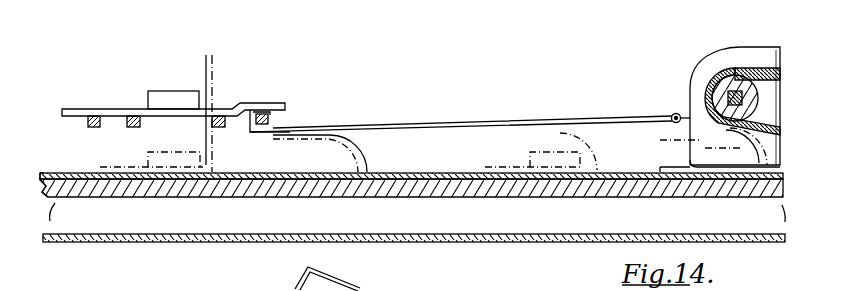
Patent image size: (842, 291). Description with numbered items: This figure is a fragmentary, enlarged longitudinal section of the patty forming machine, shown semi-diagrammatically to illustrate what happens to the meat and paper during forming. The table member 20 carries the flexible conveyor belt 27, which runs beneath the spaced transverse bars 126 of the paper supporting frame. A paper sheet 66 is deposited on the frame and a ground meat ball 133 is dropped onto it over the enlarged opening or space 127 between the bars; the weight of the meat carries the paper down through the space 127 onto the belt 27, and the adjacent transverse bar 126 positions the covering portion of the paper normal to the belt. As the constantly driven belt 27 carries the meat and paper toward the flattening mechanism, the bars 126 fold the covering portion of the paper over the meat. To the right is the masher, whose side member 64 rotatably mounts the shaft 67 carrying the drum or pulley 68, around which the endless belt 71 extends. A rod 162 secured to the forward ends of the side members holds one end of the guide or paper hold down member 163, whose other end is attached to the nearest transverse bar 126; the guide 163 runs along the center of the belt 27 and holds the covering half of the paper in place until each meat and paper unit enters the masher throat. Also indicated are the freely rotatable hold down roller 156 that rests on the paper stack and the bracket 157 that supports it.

The table member 20 is at (390, 196).
The belt 27 is at (438, 172).
The side member 64 is at (757, 55).
The paper sheet 66 is at (258, 103).
The shaft 67 is at (752, 110).
The drum or pulley 68 is at (752, 93).
The belt 71 is at (782, 72).
The bars 126 is at (130, 128).
The opening or space 127 is at (166, 122).
The ground meat ball 133 is at (188, 95).
The hold down roller 156 is at (357, 287).
The bracket 157 is at (364, 281).
The rod 162 is at (672, 113).
The guide or paper hold down member 163 is at (455, 124).